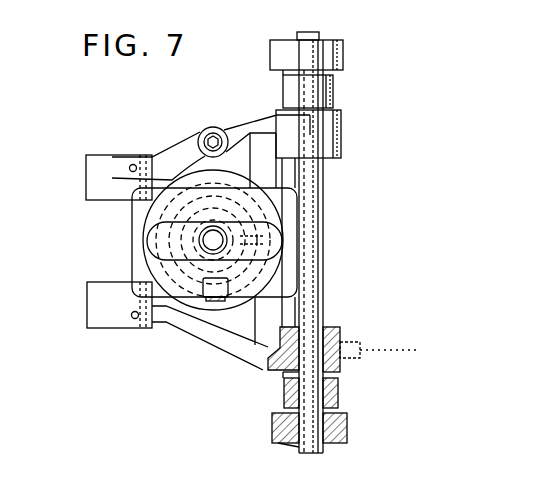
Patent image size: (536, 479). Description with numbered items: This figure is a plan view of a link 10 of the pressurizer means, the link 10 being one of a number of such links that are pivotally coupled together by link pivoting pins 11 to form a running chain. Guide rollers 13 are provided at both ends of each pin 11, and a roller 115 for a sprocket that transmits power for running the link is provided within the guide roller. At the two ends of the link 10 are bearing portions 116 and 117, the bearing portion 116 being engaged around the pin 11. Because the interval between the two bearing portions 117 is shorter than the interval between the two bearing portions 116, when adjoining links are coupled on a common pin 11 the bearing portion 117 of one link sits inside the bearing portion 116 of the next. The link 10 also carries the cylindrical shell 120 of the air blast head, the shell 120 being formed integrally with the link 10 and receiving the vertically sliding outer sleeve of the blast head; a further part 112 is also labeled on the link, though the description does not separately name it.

The link 10 is at (233, 130).
The link pivoting pin 11 is at (323, 207).
The guide roller 13 is at (333, 48).
The pivot pin 112 is at (170, 184).
The roller 115 is at (333, 88).
The bearing portion 116 is at (333, 135).
The bearing portion 117 is at (98, 160).
The cylindrical shell 120 is at (215, 303).